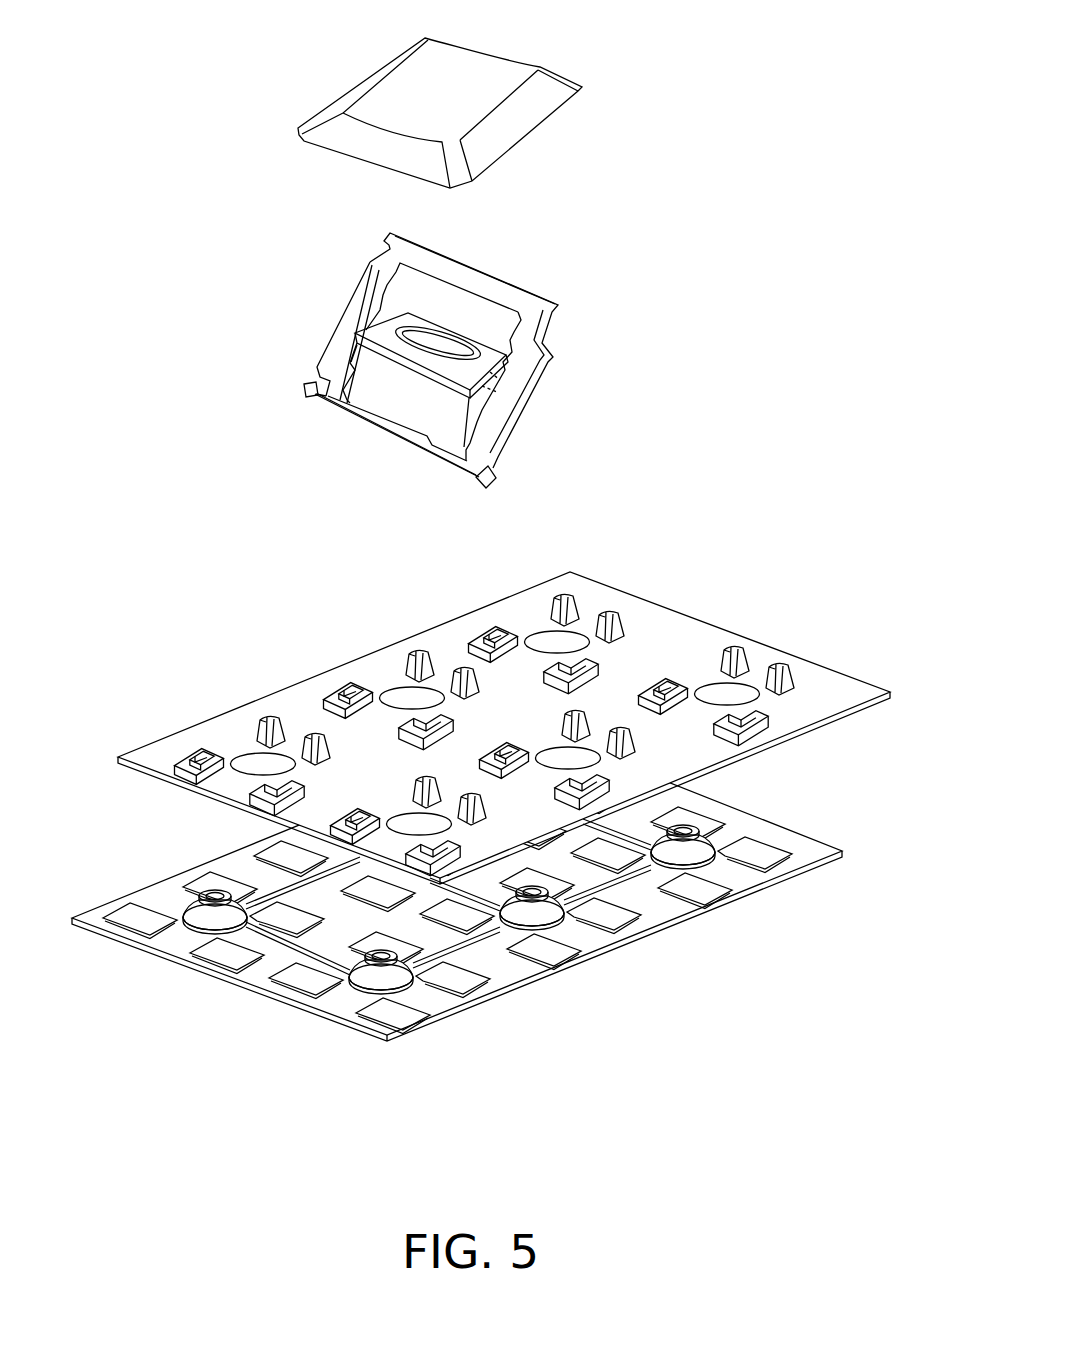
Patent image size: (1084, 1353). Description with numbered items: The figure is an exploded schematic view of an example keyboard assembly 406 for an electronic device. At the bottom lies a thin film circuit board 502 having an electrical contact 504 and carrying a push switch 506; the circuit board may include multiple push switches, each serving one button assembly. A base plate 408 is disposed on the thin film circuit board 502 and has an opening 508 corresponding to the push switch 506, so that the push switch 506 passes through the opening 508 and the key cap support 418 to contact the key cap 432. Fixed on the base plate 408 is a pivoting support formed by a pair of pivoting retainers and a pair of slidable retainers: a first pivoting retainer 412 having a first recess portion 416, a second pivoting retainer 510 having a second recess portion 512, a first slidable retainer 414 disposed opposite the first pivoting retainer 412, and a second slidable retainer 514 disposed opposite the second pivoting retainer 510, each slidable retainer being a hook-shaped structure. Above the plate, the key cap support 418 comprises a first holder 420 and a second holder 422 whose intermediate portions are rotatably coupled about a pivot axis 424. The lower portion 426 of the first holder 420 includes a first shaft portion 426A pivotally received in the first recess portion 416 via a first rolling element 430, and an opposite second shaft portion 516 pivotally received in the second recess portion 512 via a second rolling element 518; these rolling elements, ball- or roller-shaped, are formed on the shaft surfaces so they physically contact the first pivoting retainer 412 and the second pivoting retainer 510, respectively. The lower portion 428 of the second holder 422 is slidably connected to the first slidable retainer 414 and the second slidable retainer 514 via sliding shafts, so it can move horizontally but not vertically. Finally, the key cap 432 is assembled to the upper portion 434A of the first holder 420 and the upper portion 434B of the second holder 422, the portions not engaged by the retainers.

The key cap 432 is at (533, 130).
The upper portion of first holder 434A is at (520, 228).
The lower portion of second holder 428 is at (490, 326).
The key cap support 418 is at (666, 341).
The pivot axis 424 is at (512, 386).
The second holder 422 is at (530, 400).
The first holder 420 is at (500, 452).
The first rolling element 430 is at (494, 476).
The second rolling element 518 is at (304, 390).
The second shaft portion 516 is at (308, 397).
The upper portion of second holder 434B is at (390, 382).
The lower portion of first holder 426 is at (393, 461).
The first shaft portion 426A is at (480, 484).
The second recess portion 512 is at (659, 668).
The first recess portion 416 is at (732, 699).
The second slidable retainer 514 is at (742, 650).
The opening 508 is at (766, 676).
The base plate 408 is at (868, 678).
The first slidable retainer 414 is at (792, 688).
The first pivoting retainer 412 is at (766, 732).
The second pivoting retainer 510 is at (664, 712).
The thin film circuit board 502 is at (815, 866).
The electrical contact 504 is at (645, 882).
The push switch 506 is at (717, 862).
The keyboard assembly 406 is at (624, 1116).